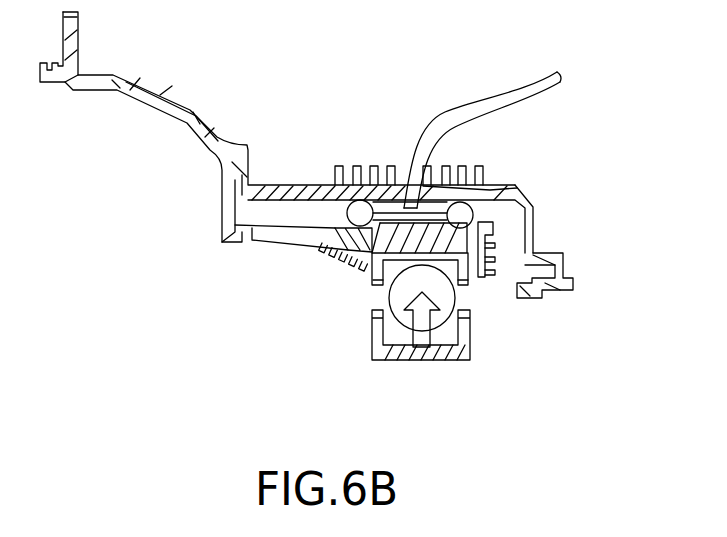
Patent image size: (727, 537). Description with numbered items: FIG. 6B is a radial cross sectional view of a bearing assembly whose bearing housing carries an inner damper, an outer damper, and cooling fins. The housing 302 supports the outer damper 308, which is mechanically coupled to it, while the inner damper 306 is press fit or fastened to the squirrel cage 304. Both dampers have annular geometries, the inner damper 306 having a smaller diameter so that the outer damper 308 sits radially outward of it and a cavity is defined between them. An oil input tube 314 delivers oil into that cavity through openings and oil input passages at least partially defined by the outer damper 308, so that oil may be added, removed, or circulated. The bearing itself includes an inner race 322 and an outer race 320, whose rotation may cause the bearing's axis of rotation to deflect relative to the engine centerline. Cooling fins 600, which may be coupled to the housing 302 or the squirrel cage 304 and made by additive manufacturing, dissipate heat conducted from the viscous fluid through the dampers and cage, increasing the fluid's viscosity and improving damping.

The housing 302 is at (543, 296).
The squirrel cage 304 is at (253, 243).
The inner damper 306 is at (447, 230).
The outer damper 308 is at (387, 177).
The oil input tube 314 is at (521, 103).
The outer race 320 is at (372, 260).
The inner race 322 is at (372, 346).
The cooling fins 600 is at (487, 277).